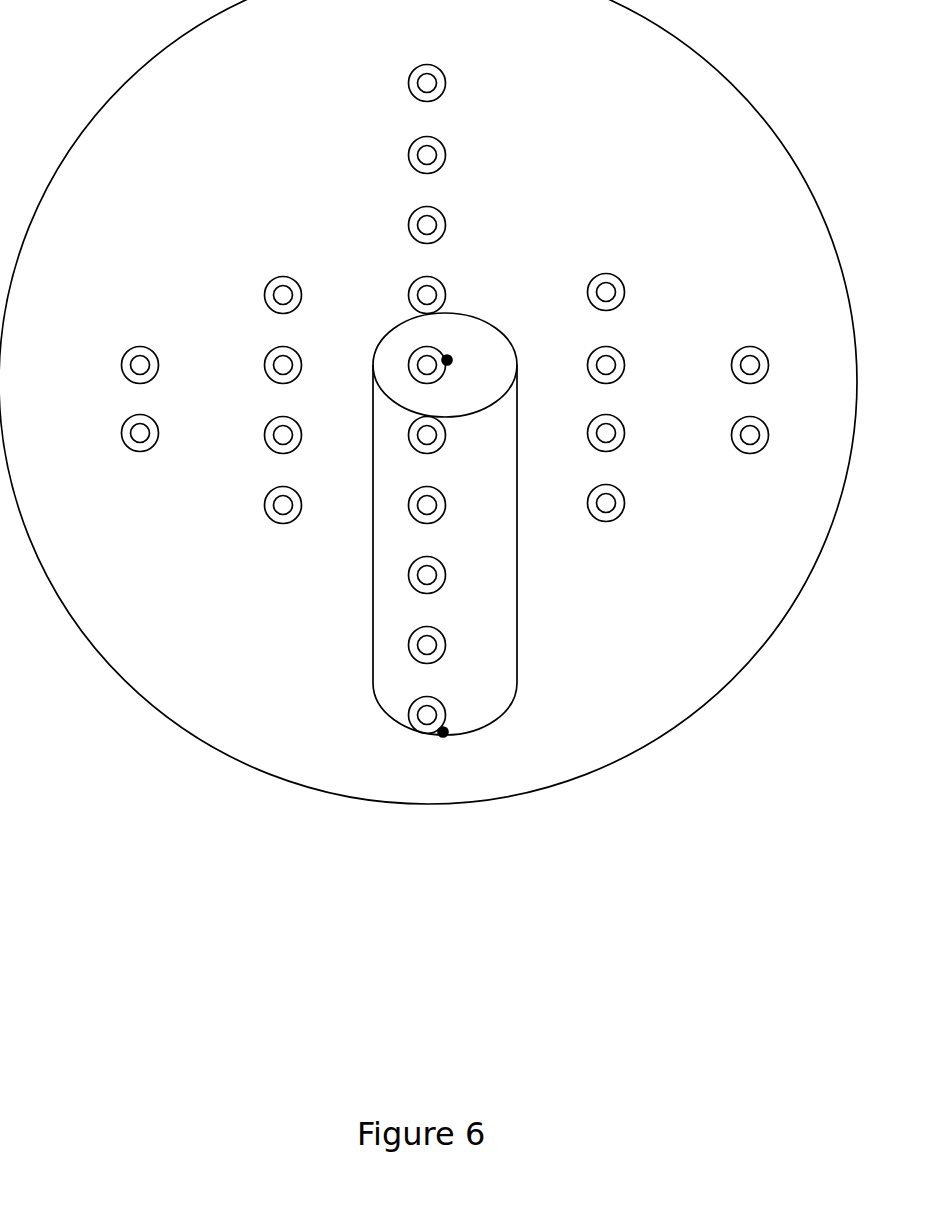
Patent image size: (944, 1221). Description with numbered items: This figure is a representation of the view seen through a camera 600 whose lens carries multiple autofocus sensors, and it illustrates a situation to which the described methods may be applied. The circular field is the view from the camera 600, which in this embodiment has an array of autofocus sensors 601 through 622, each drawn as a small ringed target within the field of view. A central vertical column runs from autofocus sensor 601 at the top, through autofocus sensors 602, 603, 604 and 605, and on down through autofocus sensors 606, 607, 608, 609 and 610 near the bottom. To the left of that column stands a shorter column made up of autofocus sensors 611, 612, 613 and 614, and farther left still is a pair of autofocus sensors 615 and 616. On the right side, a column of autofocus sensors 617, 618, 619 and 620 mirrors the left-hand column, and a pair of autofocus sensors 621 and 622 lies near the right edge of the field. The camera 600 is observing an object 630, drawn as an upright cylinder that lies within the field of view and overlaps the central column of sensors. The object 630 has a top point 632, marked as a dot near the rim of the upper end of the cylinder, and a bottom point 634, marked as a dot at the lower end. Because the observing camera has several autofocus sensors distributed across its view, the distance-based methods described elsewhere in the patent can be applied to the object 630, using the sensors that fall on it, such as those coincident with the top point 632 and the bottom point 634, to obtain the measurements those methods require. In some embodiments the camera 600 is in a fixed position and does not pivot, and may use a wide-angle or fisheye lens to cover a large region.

The camera 600 is at (642, 75).
The autofocus sensor 601 is at (405, 75).
The autofocus sensor 602 is at (405, 147).
The autofocus sensor 603 is at (405, 217).
The autofocus sensor 604 is at (405, 287).
The autofocus sensor 605 is at (405, 357).
The autofocus sensor 606 is at (409, 432).
The autofocus sensor 607 is at (408, 503).
The autofocus sensor 608 is at (408, 573).
The autofocus sensor 609 is at (408, 631).
The autofocus sensor 610 is at (409, 700).
The autofocus sensor 611 is at (261, 287).
The autofocus sensor 612 is at (261, 357).
The autofocus sensor 613 is at (261, 427).
The autofocus sensor 614 is at (261, 497).
The autofocus sensor 615 is at (118, 357).
The autofocus sensor 616 is at (118, 425).
The autofocus sensor 617 is at (630, 286).
The autofocus sensor 618 is at (584, 357).
The autofocus sensor 619 is at (584, 425).
The autofocus sensor 620 is at (584, 495).
The autofocus sensor 621 is at (728, 357).
The autofocus sensor 622 is at (728, 427).
The object 630 is at (524, 648).
The top point 632 is at (458, 354).
The bottom point 634 is at (457, 741).